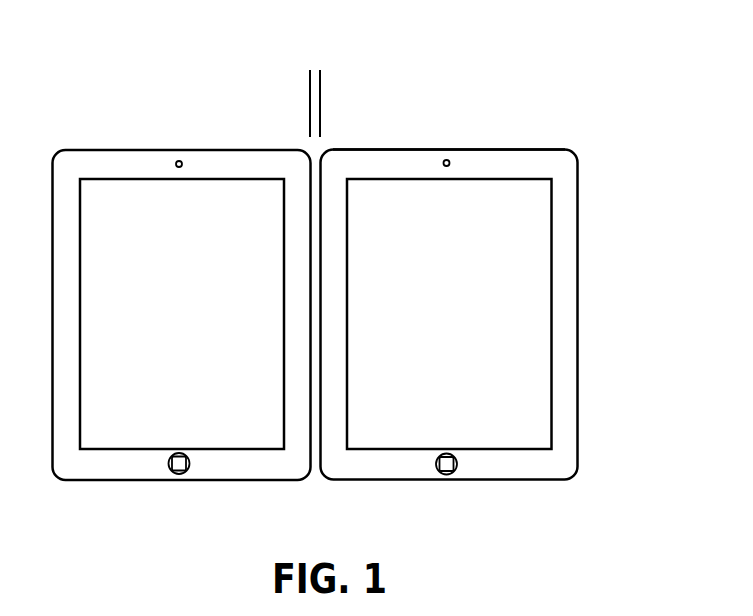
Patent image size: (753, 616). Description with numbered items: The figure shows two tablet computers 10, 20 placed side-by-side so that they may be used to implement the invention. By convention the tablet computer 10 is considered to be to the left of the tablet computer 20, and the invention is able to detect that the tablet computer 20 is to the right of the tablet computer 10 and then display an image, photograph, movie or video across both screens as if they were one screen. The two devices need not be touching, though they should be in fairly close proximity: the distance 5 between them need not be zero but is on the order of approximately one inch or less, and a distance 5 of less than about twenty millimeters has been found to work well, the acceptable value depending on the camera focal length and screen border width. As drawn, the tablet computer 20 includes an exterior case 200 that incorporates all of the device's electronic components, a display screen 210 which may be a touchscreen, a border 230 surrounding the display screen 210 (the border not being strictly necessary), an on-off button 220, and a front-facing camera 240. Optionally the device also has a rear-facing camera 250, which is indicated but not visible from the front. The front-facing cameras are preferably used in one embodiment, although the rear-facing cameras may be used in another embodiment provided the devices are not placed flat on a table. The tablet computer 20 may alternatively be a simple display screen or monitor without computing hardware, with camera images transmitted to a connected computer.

The distance 5 is at (315, 60).
The tablet computer 10 is at (76, 468).
The tablet computer 20 is at (481, 322).
The exterior case 200 is at (481, 319).
The display screen 210 is at (471, 306).
The on-off button 220 is at (447, 472).
The border 230 is at (475, 319).
The front-facing camera 240 is at (445, 160).
The rear-facing camera 250 is at (472, 130).